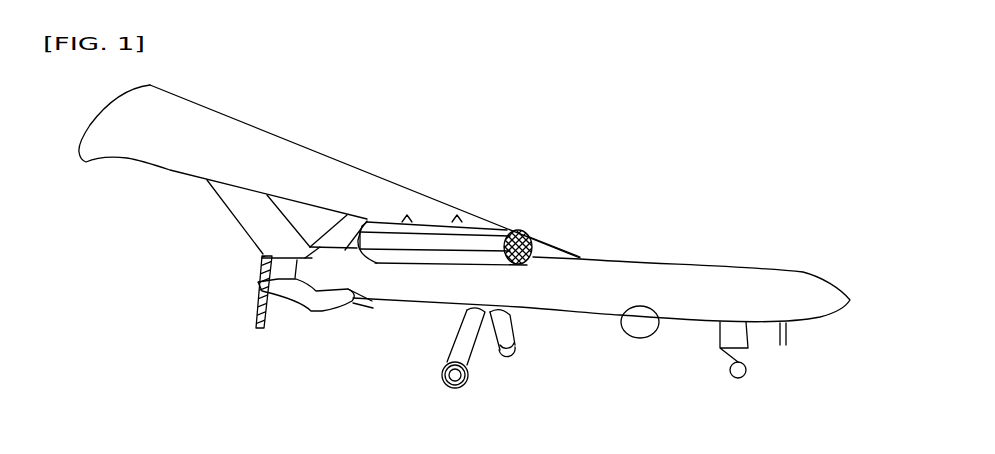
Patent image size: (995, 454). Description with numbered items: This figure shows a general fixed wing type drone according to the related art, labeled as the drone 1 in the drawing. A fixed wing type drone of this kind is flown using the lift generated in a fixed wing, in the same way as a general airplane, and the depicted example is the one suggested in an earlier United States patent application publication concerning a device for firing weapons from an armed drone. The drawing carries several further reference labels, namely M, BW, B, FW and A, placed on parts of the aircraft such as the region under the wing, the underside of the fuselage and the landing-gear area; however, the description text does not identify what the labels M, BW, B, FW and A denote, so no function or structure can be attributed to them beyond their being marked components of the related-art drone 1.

The unmanned aerial vehicle 1 is at (612, 188).
The motor M is at (427, 242).
The back wheel BW is at (468, 382).
The battery B is at (641, 338).
The front wheel FW is at (743, 378).
The antenna A is at (793, 337).